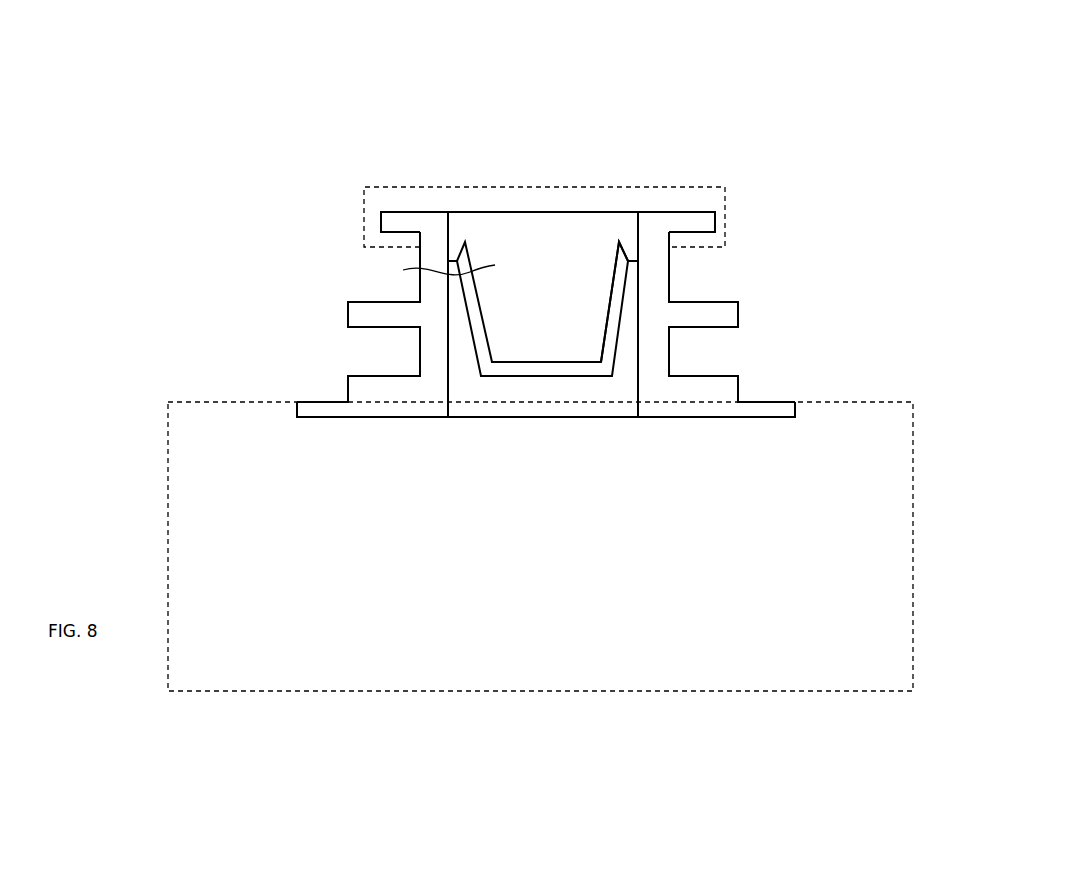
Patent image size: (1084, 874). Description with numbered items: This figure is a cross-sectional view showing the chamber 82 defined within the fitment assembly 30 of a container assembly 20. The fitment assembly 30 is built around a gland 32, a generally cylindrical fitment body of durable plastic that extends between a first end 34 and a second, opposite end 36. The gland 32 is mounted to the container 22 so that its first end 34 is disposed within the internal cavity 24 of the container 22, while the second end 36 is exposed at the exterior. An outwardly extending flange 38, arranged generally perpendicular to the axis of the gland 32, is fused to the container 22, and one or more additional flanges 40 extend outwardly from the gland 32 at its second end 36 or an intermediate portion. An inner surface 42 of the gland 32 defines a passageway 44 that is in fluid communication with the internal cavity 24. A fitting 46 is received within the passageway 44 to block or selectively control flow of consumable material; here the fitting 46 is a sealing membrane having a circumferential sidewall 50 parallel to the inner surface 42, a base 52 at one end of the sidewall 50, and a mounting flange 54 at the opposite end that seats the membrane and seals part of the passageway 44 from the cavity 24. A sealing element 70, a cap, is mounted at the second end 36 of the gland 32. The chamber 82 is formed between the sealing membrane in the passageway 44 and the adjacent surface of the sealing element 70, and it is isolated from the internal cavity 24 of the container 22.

The container assembly 20 is at (104, 120).
The container 22 is at (913, 465).
The internal cavity 24 is at (283, 628).
The fitment assembly 30 is at (342, 255).
The gland 32 is at (343, 375).
The first end 34 is at (693, 418).
The second end 36 is at (422, 212).
The outwardly extending flange 38 is at (757, 402).
The additional flange 40 is at (717, 317).
The inner surface 42 is at (450, 228).
The passageway 44 is at (577, 402).
The fitting 46 is at (546, 250).
The sidewall 50 is at (605, 290).
The base 52 is at (520, 370).
The mounting flange 54 is at (622, 258).
The sealing element 70 is at (700, 187).
The chamber 82 is at (403, 270).